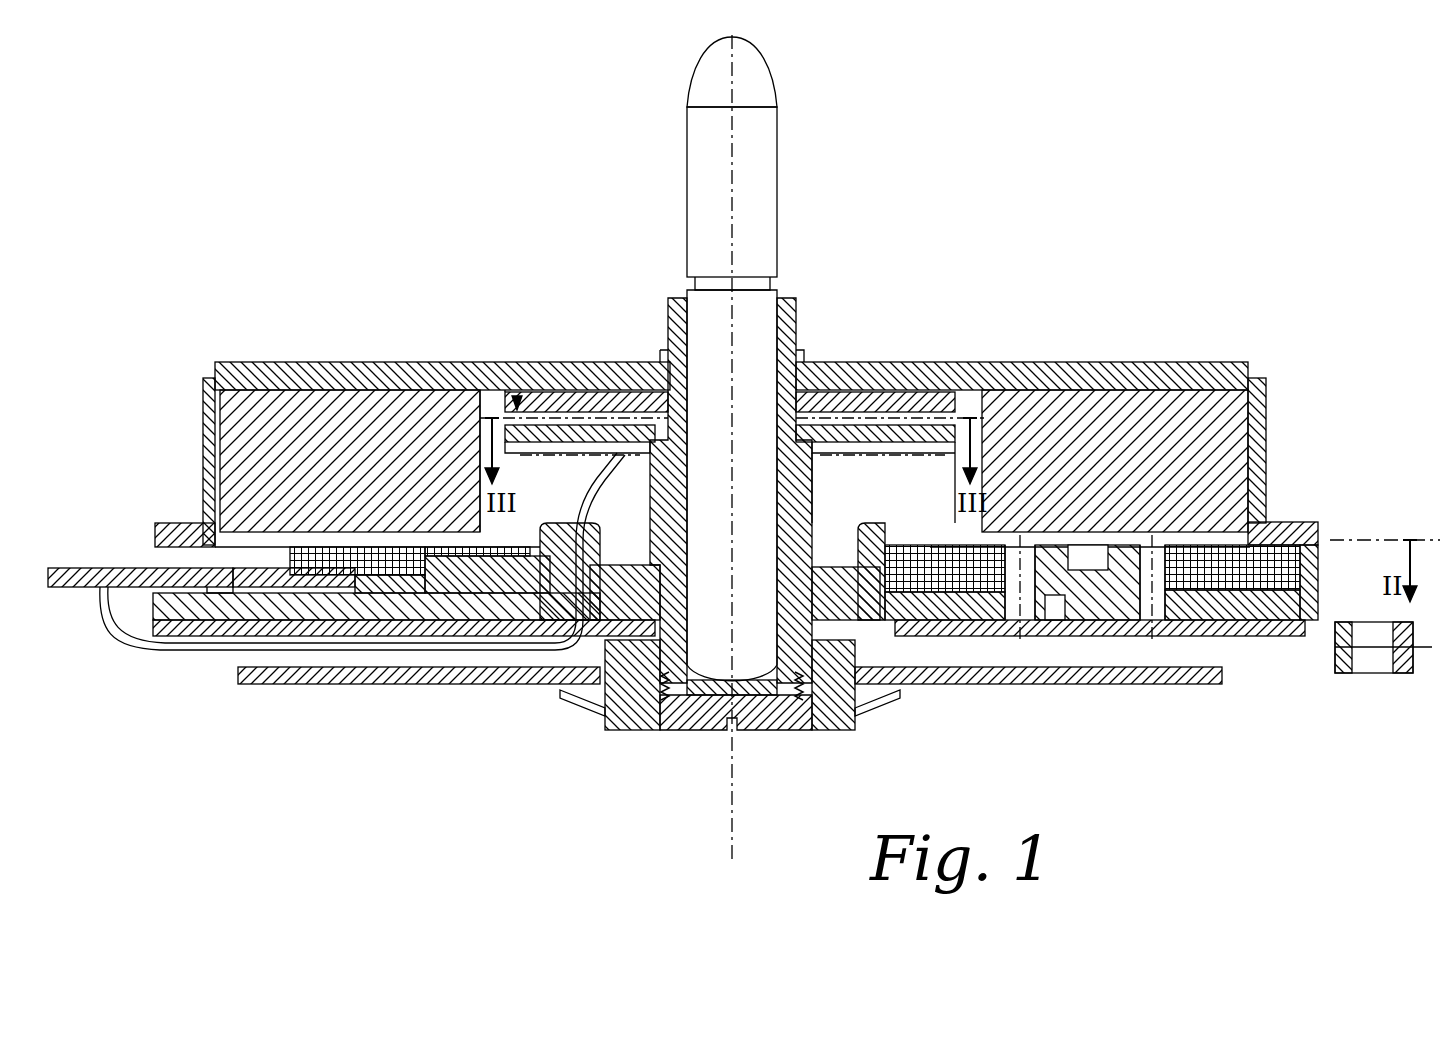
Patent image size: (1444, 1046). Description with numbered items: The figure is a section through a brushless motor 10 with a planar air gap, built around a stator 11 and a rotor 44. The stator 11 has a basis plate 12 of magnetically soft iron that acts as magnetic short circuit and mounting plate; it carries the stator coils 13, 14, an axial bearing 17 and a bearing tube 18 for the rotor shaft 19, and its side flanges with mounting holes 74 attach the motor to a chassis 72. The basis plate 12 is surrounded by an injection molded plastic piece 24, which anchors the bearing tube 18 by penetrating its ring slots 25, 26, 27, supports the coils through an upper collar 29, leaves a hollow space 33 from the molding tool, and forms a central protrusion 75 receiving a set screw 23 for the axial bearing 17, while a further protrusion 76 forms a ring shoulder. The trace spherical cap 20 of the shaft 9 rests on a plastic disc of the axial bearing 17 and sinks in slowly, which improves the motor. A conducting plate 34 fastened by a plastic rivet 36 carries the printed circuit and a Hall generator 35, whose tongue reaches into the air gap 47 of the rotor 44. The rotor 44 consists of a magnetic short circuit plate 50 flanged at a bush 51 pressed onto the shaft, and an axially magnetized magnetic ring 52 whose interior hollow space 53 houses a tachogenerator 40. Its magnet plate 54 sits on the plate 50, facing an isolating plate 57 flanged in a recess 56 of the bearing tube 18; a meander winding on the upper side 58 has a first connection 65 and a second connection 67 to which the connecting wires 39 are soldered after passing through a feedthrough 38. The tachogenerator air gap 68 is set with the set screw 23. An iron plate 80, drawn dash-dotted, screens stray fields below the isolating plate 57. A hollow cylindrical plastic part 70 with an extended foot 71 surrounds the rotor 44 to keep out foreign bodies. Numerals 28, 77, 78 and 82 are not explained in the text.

The shaft 9 is at (756, 424).
The motor 10 is at (1282, 350).
The stator 11 is at (1347, 563).
The basis plate 12 is at (438, 640).
The stator coil 13 is at (214, 545).
The stator coil 14 is at (1266, 545).
The axial bearing 17 is at (648, 727).
The bearing tube 18 is at (815, 438).
The rotor shaft 19 is at (800, 730).
The trace spherical cap 20 is at (720, 680).
The set screw 23 is at (775, 732).
The injection molded plastic piece 24 is at (500, 603).
The ring slot 25 is at (836, 600).
The ring slot 26 is at (826, 572).
The ring slot 27 is at (852, 722).
The base 28 is at (705, 732).
The upper collar 29 is at (906, 545).
The hollow space 33 is at (1150, 686).
The conducting plate 34 is at (95, 575).
The Hall generator 35 is at (330, 550).
The plastic rivet 36 is at (205, 530).
The feedthrough 38 is at (598, 705).
The connecting wires 39 is at (553, 660).
The tachogenerator 40 is at (514, 398).
The rotor 44 is at (1262, 404).
The air gap 47 is at (410, 553).
The magnetic short circuit plate 50 is at (268, 361).
The bush 51 is at (797, 328).
The magnetic ring 52 is at (364, 456).
The hollow space 53 is at (886, 491).
The magnet plate 54 is at (566, 393).
The recess 56 is at (672, 362).
The isolating plate 57 is at (948, 440).
The upper side of isolating plate 58 is at (916, 377).
The first connection 65 is at (612, 361).
The second connection 67 is at (597, 361).
The air gap of tachogenerator 68 is at (520, 393).
The hollow cylindrical part 70 is at (205, 402).
The extended foot 71 is at (1307, 550).
The chassis 72 is at (1400, 676).
The mounting hole 74 is at (1350, 675).
The protrusion 75 is at (845, 732).
The protrusion 76 is at (926, 690).
The bottom plate 77 is at (295, 686).
The strut 78 is at (906, 703).
The iron plate 80 is at (568, 455).
The post 82 is at (1016, 686).